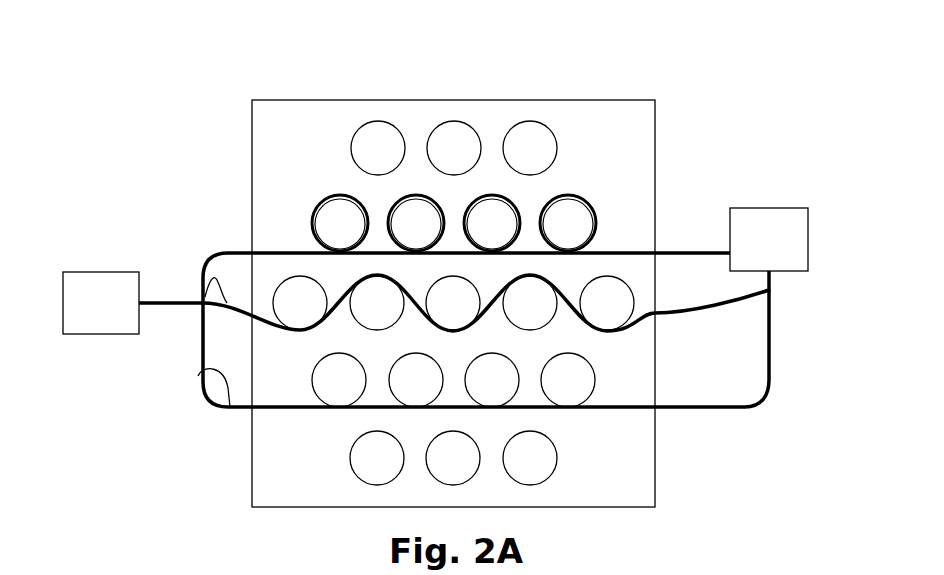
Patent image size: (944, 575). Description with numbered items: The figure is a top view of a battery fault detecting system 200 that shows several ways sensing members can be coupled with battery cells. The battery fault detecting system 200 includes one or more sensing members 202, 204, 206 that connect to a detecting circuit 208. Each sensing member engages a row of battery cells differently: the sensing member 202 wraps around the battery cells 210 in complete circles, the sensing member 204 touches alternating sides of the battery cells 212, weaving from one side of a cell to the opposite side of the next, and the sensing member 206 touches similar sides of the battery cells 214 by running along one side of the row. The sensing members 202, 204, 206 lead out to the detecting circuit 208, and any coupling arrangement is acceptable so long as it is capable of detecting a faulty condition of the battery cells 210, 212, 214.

The battery fault detecting system 200 is at (160, 33).
The sensing member 202 is at (231, 246).
The sensing member 204 is at (203, 287).
The sensing member 206 is at (205, 378).
The detecting circuit 208 is at (85, 316).
The battery cells 210 is at (324, 236).
The battery cells 212 is at (284, 316).
The battery cells 214 is at (323, 393).